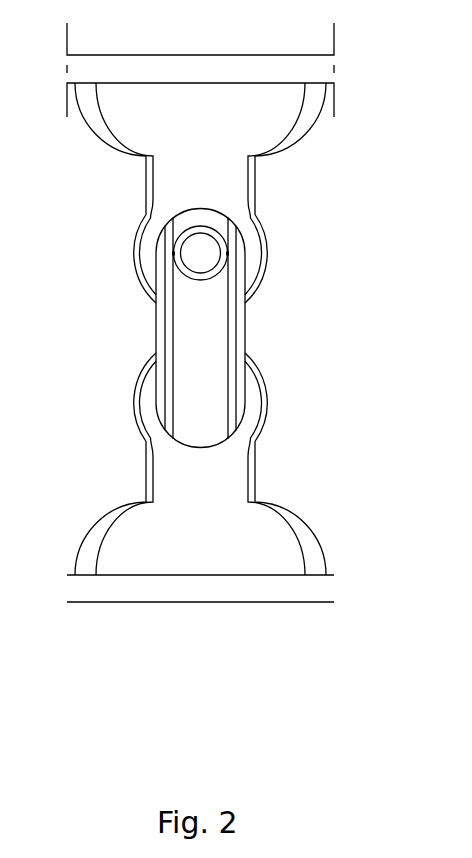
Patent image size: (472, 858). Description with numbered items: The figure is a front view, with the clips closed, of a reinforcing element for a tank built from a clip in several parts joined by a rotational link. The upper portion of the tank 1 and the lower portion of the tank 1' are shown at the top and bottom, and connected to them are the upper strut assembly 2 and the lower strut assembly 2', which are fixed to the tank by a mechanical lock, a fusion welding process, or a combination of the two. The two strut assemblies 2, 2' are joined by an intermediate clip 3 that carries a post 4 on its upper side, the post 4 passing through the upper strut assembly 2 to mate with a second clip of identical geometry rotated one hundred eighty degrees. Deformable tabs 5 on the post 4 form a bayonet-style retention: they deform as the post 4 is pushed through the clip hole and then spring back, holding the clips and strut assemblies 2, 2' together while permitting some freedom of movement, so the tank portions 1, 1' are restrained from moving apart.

The upper portion of the tank 1 is at (200, 58).
The lower portion of the tank 1' is at (200, 616).
The upper strut assembly 2 is at (207, 193).
The lower strut assembly 2' is at (216, 464).
The intermediate clip 3 is at (248, 327).
The post 4 is at (183, 225).
The deformable tab 5 is at (172, 257).